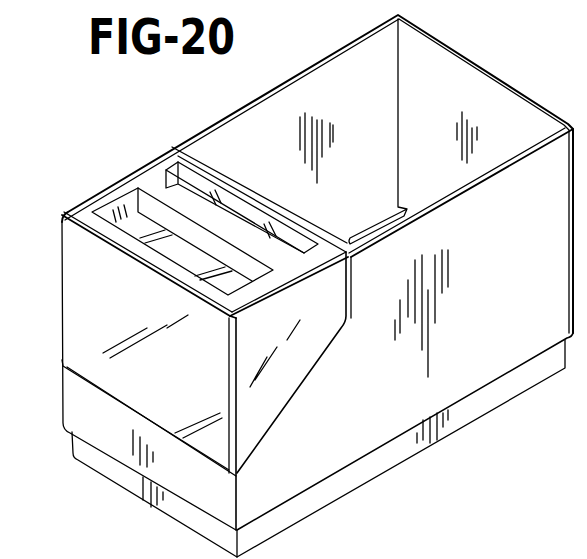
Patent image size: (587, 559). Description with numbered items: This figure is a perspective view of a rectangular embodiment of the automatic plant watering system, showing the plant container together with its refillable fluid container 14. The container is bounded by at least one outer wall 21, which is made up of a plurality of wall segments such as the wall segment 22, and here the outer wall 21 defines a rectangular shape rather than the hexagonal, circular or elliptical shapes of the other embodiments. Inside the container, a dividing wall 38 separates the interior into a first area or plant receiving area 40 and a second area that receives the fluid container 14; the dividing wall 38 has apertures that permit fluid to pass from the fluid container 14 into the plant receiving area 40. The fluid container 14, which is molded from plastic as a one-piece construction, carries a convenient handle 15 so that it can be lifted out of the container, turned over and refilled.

The fluid container 14 is at (74, 222).
The handle 15 is at (163, 184).
The outer wall 21 is at (471, 60).
The wall segment 22 is at (520, 275).
The dividing wall 38 is at (212, 150).
The plant receiving area 40 is at (311, 88).